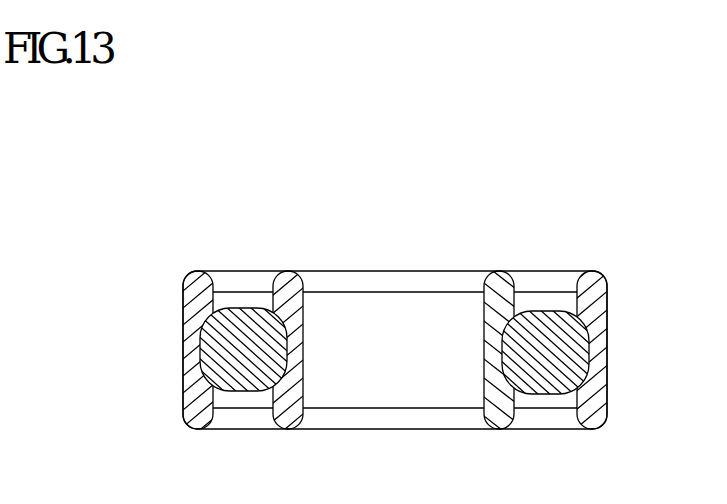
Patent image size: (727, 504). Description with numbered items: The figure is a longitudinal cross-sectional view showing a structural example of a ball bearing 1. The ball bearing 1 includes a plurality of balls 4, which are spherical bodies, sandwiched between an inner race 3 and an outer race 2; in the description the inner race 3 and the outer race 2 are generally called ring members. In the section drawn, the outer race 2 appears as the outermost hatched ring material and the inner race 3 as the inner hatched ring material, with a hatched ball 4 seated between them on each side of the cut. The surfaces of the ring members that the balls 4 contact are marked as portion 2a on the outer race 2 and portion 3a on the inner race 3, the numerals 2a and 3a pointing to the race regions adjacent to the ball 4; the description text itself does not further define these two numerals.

The ball bearing 1 is at (436, 230).
The outer race 2 is at (600, 392).
The outer ring raceway 2a is at (209, 313).
The inner race 3 is at (496, 414).
The inner ring raceway 3a is at (270, 387).
The balls 4 is at (572, 345).